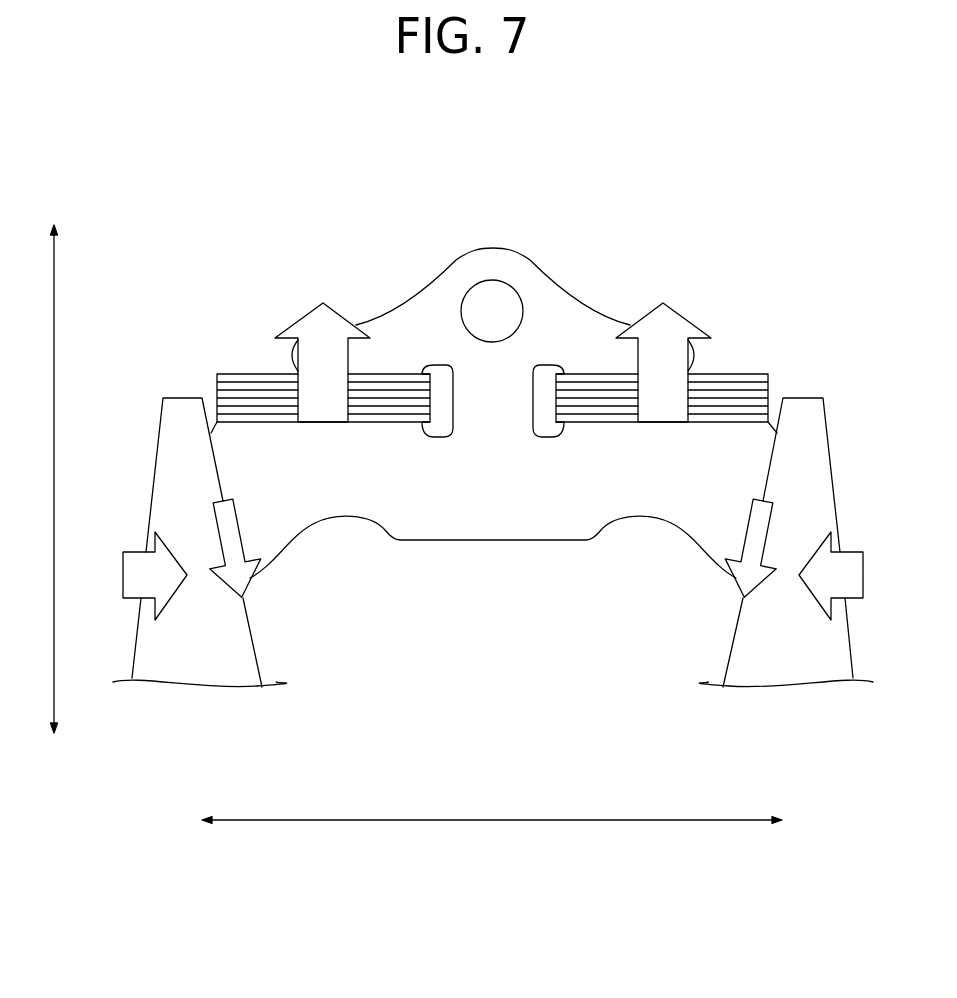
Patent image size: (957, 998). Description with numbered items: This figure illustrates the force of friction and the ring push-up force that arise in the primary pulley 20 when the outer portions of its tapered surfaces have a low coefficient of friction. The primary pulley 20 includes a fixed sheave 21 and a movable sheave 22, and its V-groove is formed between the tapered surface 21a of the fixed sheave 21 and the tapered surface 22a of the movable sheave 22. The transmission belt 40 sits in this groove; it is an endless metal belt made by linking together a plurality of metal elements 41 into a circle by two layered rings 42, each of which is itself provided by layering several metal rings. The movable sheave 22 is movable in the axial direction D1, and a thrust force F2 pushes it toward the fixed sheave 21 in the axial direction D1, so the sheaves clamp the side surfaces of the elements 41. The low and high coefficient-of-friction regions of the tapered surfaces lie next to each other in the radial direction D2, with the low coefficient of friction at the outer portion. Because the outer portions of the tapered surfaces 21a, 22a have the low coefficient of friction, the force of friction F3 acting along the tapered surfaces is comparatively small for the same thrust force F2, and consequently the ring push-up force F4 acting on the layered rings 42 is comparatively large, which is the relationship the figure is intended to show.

The primary pulley 20 is at (145, 390).
The fixed sheave 21 is at (837, 452).
The tapered surface of the fixed sheave 21a is at (728, 648).
The movable sheave 22 is at (150, 452).
The tapered surface of the movable sheave 22a is at (258, 648).
The transmission belt 40 is at (493, 286).
The element 41 is at (543, 267).
The layered ring 42 is at (226, 373).
The thrust force F2 is at (133, 550).
The force of friction F3 is at (247, 587).
The ring push-up force F4 is at (305, 317).
The axial direction D1 is at (492, 807).
The radial direction D2 is at (36, 479).